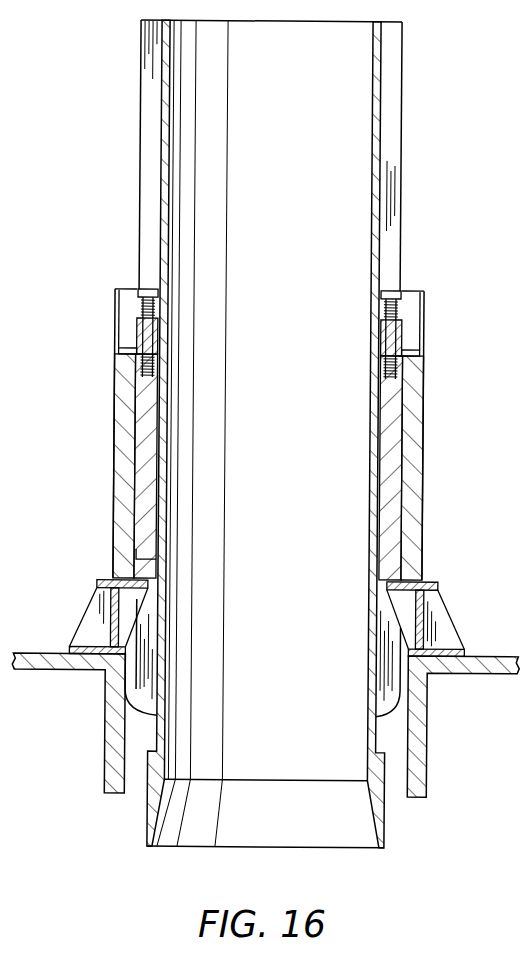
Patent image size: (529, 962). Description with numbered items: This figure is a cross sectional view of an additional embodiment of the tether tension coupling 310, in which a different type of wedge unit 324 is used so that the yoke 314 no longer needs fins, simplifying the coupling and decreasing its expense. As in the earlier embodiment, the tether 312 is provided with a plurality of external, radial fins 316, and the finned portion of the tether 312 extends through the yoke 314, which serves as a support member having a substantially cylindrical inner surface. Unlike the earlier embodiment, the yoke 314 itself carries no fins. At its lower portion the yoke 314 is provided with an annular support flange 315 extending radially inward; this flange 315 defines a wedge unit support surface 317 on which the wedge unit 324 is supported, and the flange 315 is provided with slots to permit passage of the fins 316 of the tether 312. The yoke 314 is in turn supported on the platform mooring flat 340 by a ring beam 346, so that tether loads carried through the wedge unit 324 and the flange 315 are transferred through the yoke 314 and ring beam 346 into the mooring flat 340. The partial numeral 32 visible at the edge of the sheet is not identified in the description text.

The tether tension coupling 310 is at (99, 290).
The tether 312 is at (376, 54).
The yoke 314 is at (420, 484).
The annular support flange 315 is at (390, 572).
The external radial fins 316 is at (392, 96).
The wedge unit support surface 317 is at (147, 557).
The wedge unit 324 is at (393, 409).
The platform mooring flat 340 is at (53, 653).
The ring beam 346 is at (440, 620).
The pipe section 32 is at (512, 145).